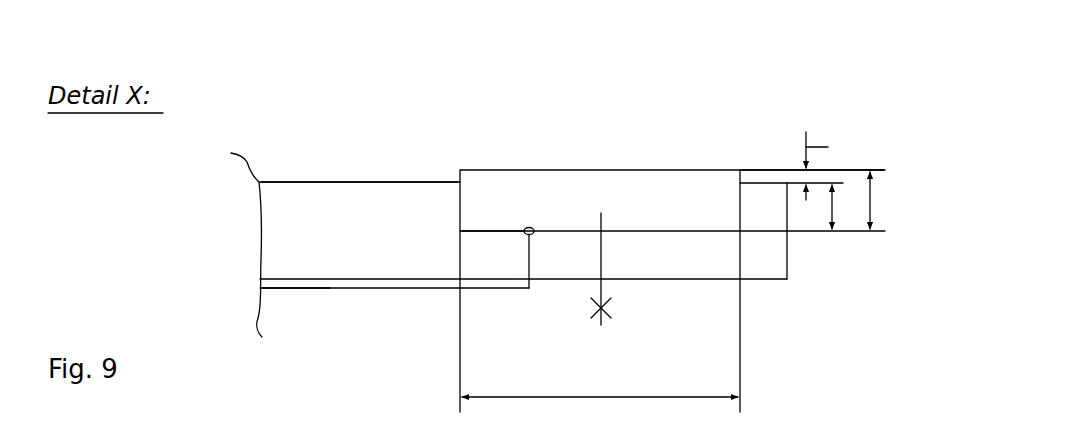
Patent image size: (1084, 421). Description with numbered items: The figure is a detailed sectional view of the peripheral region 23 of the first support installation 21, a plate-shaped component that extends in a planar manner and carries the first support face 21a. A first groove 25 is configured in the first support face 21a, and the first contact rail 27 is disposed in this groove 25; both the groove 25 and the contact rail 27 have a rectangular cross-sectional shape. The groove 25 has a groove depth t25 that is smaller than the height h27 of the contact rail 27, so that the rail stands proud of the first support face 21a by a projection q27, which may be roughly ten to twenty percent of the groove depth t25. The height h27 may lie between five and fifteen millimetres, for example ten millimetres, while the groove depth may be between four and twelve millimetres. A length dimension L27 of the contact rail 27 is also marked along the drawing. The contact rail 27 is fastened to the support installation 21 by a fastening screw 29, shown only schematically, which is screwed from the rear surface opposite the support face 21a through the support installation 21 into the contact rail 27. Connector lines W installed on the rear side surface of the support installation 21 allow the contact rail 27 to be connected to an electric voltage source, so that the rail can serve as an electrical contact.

The first support installation 21 is at (258, 230).
The first support face 21a is at (300, 180).
The peripheral region 23 is at (480, 122).
The first groove 25 is at (458, 218).
The first contact rail 27 is at (718, 176).
The fastening screw 29 is at (601, 258).
The connector lines W is at (320, 289).
The length of step 27 L27 is at (600, 383).
The projection q27 is at (840, 166).
The groove depth t25 is at (832, 215).
The height of the contact rail h27 is at (870, 198).